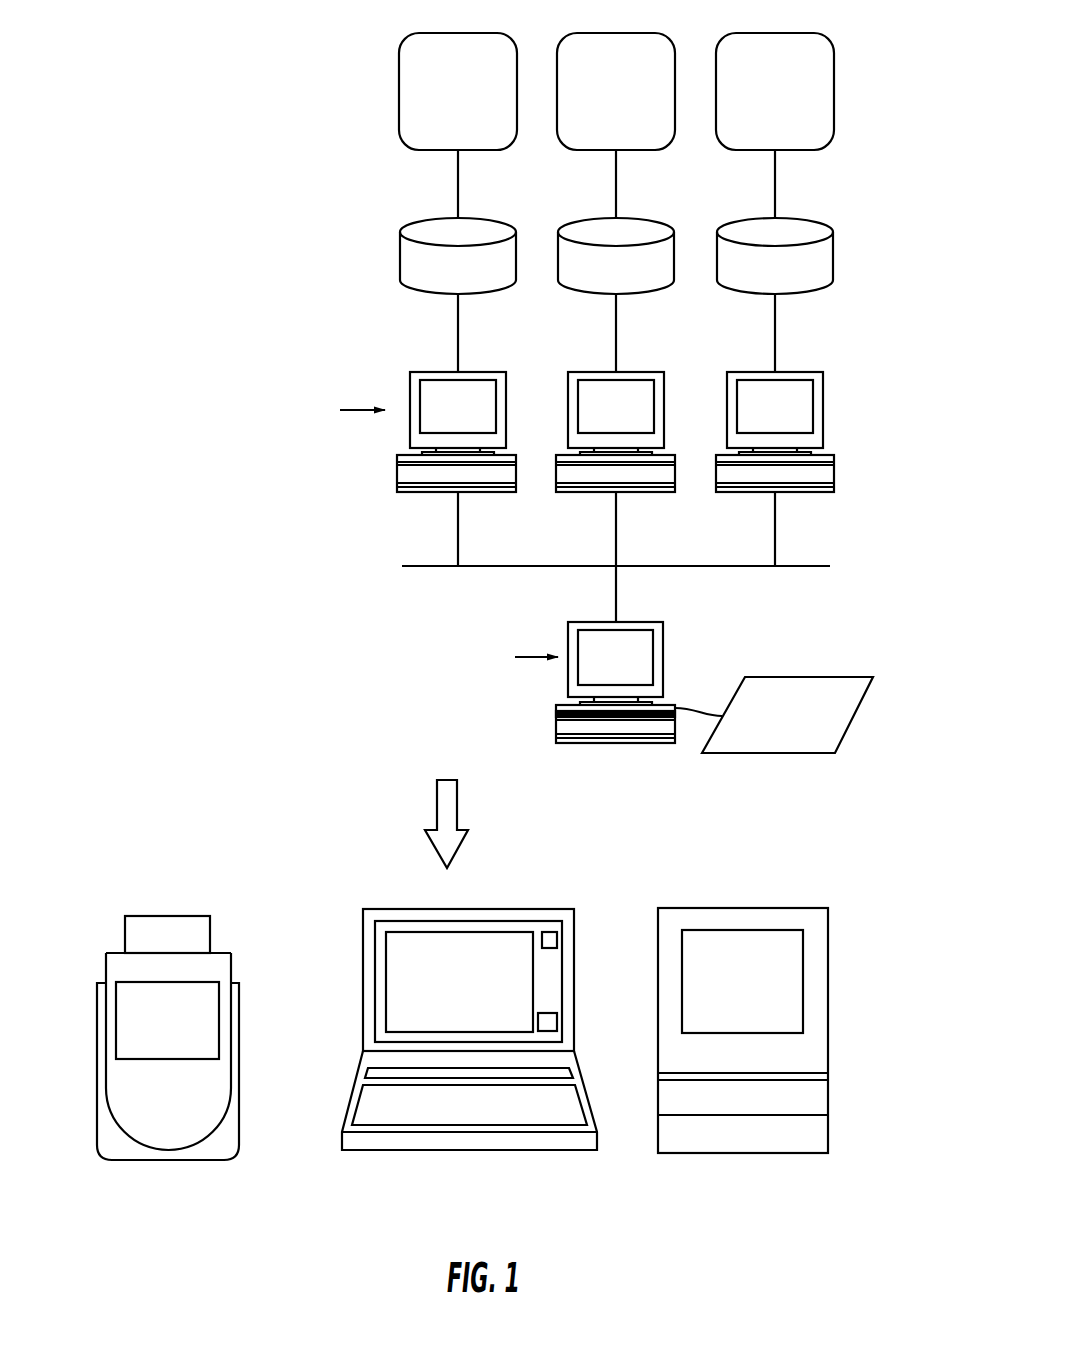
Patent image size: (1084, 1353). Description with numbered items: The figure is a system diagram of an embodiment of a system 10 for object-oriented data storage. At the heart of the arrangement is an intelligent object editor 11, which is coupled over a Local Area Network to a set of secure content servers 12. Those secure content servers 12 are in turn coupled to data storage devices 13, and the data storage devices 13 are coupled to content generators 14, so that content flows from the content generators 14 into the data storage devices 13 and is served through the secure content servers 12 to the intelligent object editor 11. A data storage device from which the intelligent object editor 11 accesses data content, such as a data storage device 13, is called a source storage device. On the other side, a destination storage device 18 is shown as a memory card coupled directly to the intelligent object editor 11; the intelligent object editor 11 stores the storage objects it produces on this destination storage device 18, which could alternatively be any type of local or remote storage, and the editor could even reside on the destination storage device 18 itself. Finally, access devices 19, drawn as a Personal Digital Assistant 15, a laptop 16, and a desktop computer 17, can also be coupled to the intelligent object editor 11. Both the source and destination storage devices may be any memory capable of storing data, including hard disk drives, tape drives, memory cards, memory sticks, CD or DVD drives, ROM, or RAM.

The system 10 is at (172, 722).
The intelligent object editor 11 is at (665, 640).
The secure content servers 12 is at (838, 410).
The data storage devices 13 is at (851, 251).
The content generators 14 is at (856, 66).
The Personal Digital Assistant (PDA) 15 is at (190, 913).
The laptop 16 is at (548, 907).
The desktop computer 17 is at (805, 905).
The destination storage device 18 is at (845, 675).
The access devices 19 is at (848, 1000).